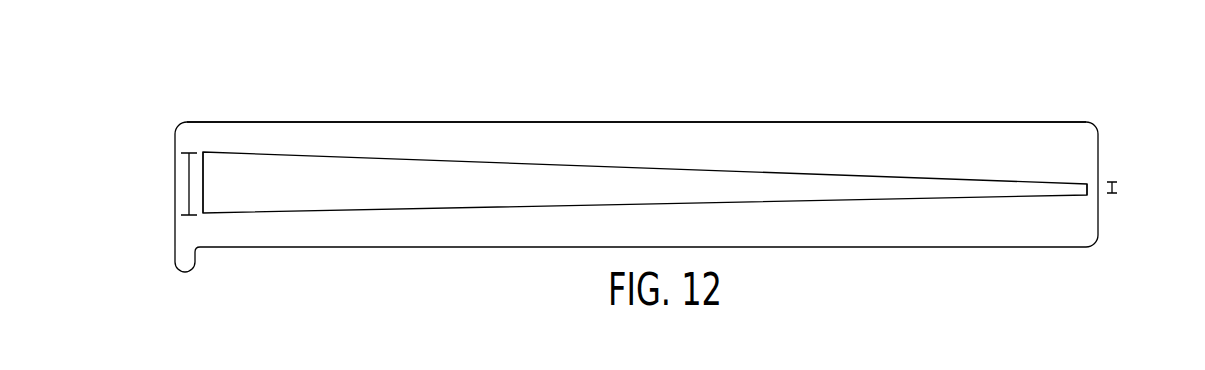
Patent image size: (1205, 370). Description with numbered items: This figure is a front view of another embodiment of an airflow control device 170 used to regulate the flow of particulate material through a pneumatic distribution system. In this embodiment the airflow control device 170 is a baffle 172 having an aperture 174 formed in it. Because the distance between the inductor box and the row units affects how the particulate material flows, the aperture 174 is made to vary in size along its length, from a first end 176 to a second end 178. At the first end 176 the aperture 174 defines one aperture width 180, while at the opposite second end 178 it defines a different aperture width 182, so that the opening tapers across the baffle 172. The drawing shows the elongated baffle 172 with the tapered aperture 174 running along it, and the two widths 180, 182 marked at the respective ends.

The airflow control device 170 is at (879, 98).
The baffle 172 is at (688, 121).
The aperture 174 is at (645, 167).
The first end 176 is at (205, 181).
The second end 178 is at (1085, 190).
The aperture width 180 is at (187, 180).
The aperture width 182 is at (1118, 188).